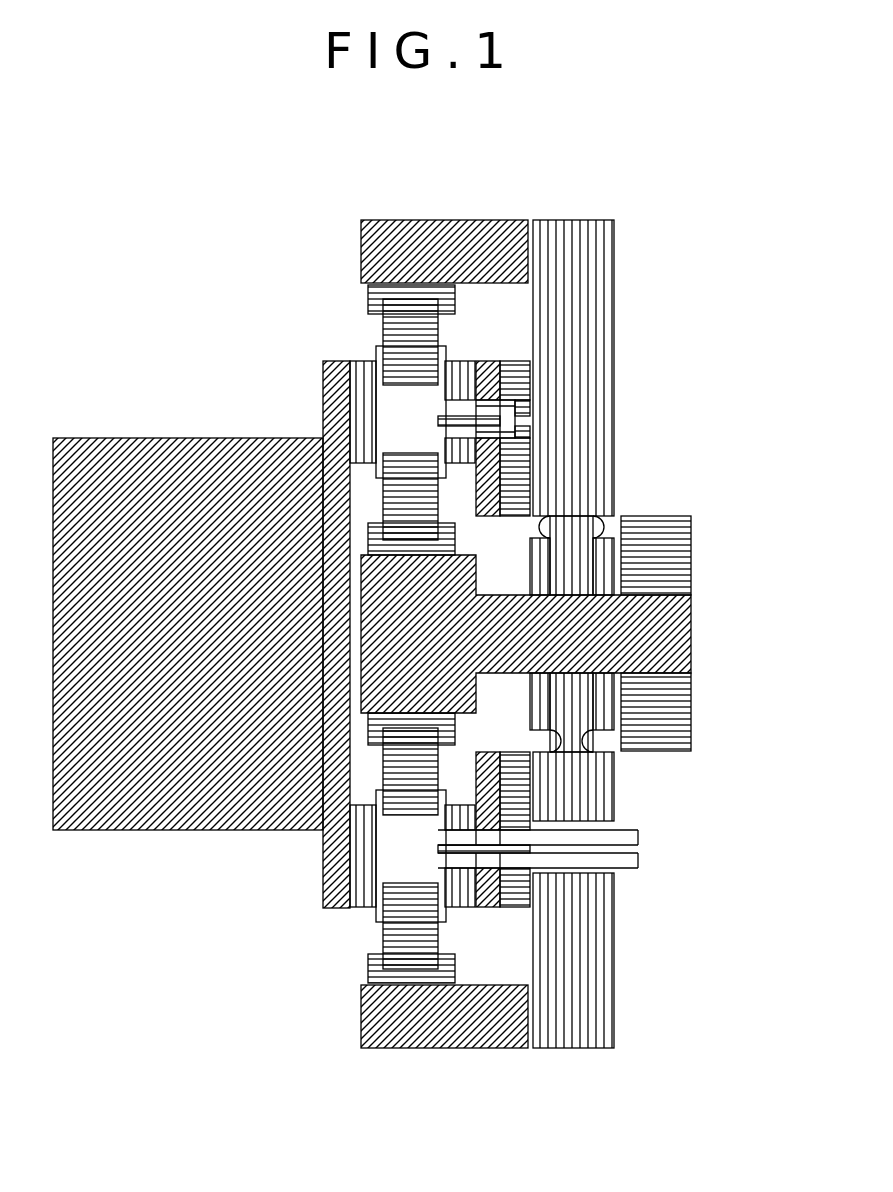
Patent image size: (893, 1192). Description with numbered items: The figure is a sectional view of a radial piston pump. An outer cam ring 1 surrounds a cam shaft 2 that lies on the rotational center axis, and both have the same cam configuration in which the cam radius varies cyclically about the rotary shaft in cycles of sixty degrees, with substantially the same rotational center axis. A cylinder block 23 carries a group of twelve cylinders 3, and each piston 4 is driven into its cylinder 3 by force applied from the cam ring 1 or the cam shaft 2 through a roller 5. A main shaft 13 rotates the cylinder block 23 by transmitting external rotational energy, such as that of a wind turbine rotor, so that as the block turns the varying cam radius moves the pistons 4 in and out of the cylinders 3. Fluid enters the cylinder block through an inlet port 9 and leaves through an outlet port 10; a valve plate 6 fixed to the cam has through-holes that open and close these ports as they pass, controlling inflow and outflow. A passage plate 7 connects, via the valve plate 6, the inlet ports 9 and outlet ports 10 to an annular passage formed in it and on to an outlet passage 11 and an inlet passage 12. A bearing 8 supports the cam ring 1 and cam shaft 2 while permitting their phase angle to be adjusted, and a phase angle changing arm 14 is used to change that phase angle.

The outer cam ring 1 is at (485, 212).
The cam shaft 2 is at (680, 613).
The cylinder 3 is at (368, 342).
The piston 4 is at (373, 328).
The roller 5 is at (362, 288).
The valve plate 6 is at (483, 353).
The passage plate 7 is at (503, 380).
The bearing 8 is at (588, 250).
The inlet port 9 is at (455, 398).
The outlet port 10 is at (455, 422).
The outlet passage 11 is at (622, 827).
The inlet passage 12 is at (623, 850).
The main shaft 13 is at (110, 450).
The phase angle changing arm 14 is at (667, 713).
The cylinder block 23 is at (315, 375).